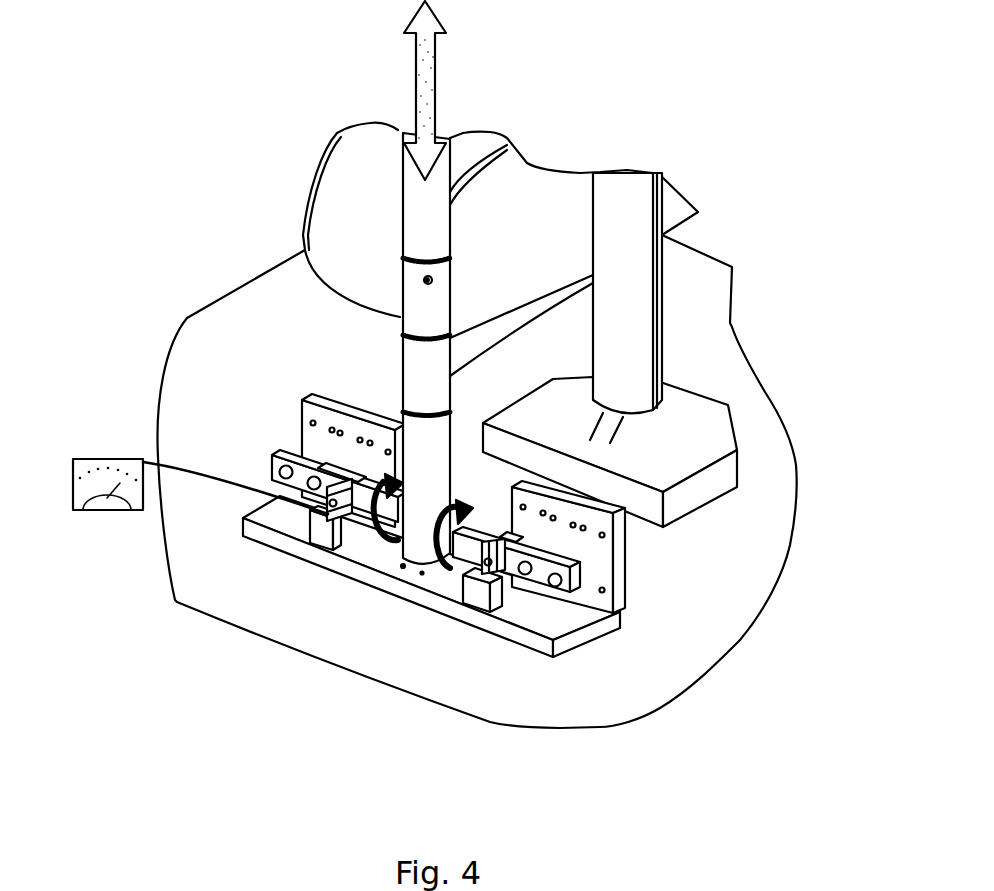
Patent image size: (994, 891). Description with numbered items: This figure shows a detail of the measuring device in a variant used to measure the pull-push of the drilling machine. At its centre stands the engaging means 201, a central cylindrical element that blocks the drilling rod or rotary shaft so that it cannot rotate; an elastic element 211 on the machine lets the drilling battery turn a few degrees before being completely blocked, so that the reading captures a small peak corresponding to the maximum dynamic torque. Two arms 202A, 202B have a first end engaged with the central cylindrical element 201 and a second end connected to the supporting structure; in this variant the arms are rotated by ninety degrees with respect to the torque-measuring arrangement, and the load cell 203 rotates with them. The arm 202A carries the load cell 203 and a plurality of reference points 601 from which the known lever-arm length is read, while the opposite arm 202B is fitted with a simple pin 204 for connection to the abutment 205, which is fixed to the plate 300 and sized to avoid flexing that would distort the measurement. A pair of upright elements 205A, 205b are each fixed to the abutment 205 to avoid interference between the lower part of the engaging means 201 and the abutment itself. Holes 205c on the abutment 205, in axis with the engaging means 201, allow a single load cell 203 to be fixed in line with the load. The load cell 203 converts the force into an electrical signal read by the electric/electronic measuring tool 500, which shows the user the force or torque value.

The engaging means 201 is at (413, 303).
The elastic element 211 is at (658, 200).
The arm 202A is at (300, 470).
The arm 202B is at (519, 578).
The reference points 601 is at (284, 432).
The electric/electronic measuring tool 500 is at (93, 497).
The load cell 203 is at (331, 495).
The pin 204 is at (540, 578).
The abutment 205 is at (357, 573).
The upright element 205A is at (478, 592).
The upright element 205b is at (327, 541).
The holes 205c is at (422, 574).
The plate 300 is at (510, 697).